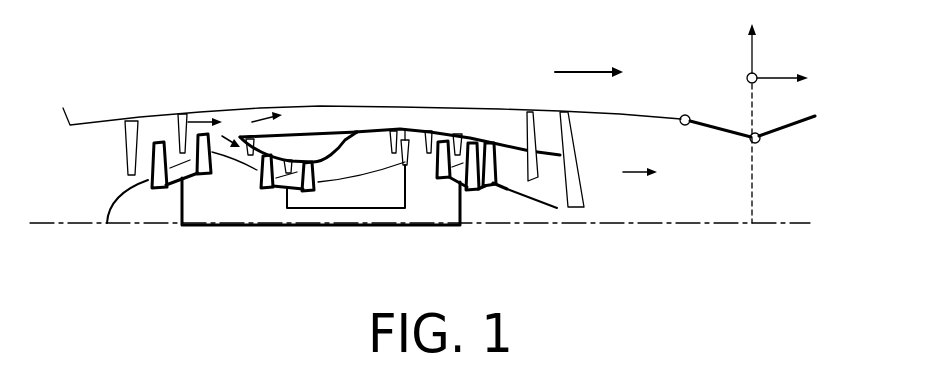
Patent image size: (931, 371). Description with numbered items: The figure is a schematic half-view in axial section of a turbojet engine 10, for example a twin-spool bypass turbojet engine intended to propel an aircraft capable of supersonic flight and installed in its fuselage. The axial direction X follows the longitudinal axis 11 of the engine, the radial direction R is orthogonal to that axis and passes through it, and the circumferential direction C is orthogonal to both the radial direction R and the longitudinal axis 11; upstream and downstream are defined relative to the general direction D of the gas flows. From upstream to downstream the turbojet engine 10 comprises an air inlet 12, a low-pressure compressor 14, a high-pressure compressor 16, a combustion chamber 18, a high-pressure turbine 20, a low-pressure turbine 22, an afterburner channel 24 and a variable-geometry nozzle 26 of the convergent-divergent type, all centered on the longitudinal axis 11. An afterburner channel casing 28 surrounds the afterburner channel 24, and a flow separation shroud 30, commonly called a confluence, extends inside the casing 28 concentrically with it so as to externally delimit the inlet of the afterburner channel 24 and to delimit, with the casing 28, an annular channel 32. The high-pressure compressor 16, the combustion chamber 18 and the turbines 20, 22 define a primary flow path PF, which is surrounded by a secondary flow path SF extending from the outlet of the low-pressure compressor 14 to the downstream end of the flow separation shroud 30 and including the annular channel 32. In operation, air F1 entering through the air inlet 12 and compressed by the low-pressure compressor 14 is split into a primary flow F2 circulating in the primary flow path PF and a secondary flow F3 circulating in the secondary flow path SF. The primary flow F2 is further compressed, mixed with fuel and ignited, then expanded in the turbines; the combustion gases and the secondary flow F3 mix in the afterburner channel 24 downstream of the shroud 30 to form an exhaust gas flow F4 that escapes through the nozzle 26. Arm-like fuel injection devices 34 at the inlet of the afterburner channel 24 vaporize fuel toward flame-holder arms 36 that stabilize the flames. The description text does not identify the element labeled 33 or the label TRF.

The turbojet engine 10 is at (227, 78).
The longitudinal axis 11 is at (753, 225).
The air inlet 12 is at (95, 170).
The low-pressure compressor 14 is at (150, 127).
The high-pressure compressor 16 is at (282, 150).
The combustion chamber 18 is at (367, 140).
The high-pressure turbine 20 is at (418, 128).
The low-pressure turbine 22 is at (472, 132).
The afterburner channel 24 is at (632, 218).
The variable-geometry nozzle 26 is at (714, 132).
The afterburner channel casing 28 is at (585, 113).
The flow separation shroud 30 is at (563, 163).
The annular channel 32 is at (547, 125).
The exhaust case wall 33 is at (536, 192).
The fuel injection devices 34 is at (535, 166).
The flame-holder arms 36 is at (583, 162).
The air F1 is at (197, 117).
The primary flow F2 is at (222, 138).
The secondary flow F3 is at (255, 125).
The exhaust gas flow F4 is at (635, 175).
The secondary flow path SF is at (337, 132).
The primary flow path PF is at (300, 197).
The turbine rear frame TRF is at (485, 183).
The general direction of gas flows D is at (592, 70).
The radial direction R is at (752, 36).
The axial direction X is at (792, 80).
The circumferential direction C is at (742, 148).